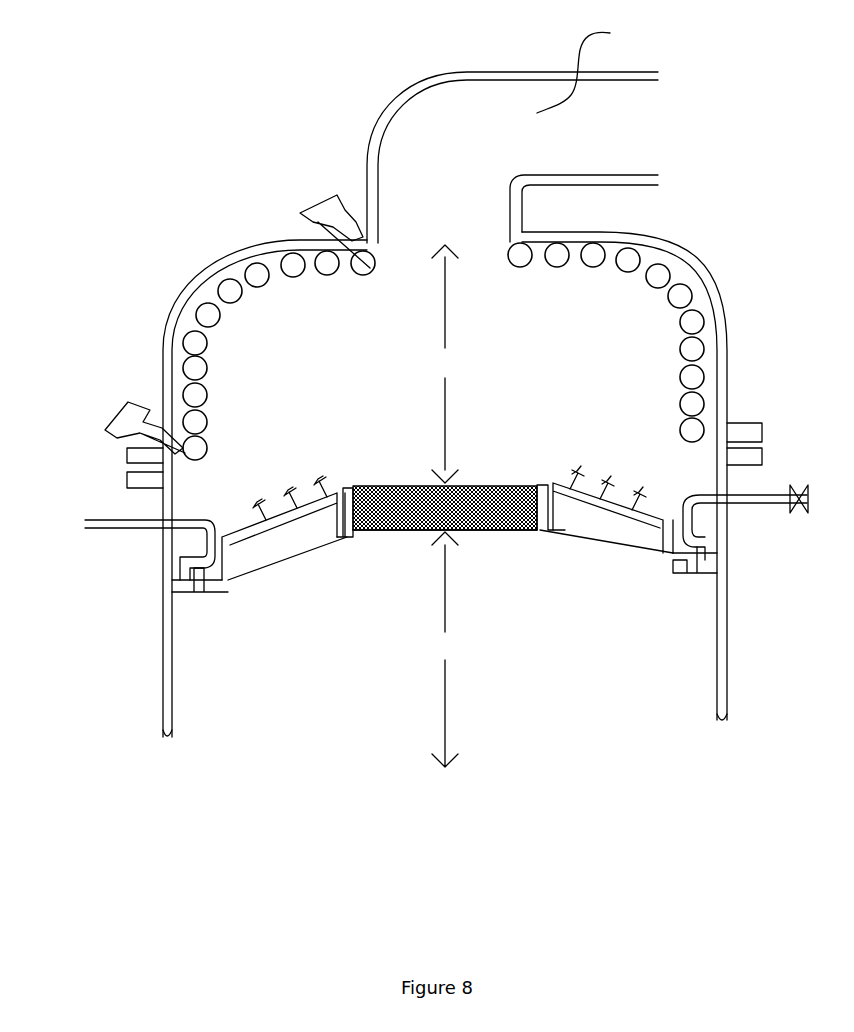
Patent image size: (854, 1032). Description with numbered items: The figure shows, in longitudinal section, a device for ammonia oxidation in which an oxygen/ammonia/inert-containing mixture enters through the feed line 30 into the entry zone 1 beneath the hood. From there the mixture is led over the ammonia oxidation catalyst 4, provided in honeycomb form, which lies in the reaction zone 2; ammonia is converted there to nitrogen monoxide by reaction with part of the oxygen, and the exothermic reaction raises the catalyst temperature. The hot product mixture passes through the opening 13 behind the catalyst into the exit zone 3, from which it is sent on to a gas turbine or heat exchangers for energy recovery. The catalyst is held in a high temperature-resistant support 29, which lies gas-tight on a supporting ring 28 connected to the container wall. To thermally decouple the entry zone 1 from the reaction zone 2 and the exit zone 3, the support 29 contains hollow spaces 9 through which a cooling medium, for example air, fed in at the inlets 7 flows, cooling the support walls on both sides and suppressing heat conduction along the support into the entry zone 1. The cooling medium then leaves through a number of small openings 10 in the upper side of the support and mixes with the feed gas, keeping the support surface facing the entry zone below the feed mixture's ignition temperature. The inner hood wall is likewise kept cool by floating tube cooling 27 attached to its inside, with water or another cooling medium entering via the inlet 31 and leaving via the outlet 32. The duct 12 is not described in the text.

The entry zone 1 is at (445, 364).
The reaction zone 2 is at (378, 486).
The exit zone 3 is at (445, 649).
The ammonia oxidation catalyst 4 is at (507, 484).
The inlets 7 is at (753, 508).
The hollow spaces 9 is at (310, 530).
The small openings 10 is at (328, 492).
The exhaust duct 12 is at (462, 76).
The opening 13 is at (485, 533).
The floating tube cooling 27 is at (246, 302).
The supporting ring 28 is at (240, 587).
The high temperature-resistant support 29 is at (280, 560).
The feed line 30 is at (591, 72).
The inlet 31 is at (113, 414).
The outlet 32 is at (300, 203).